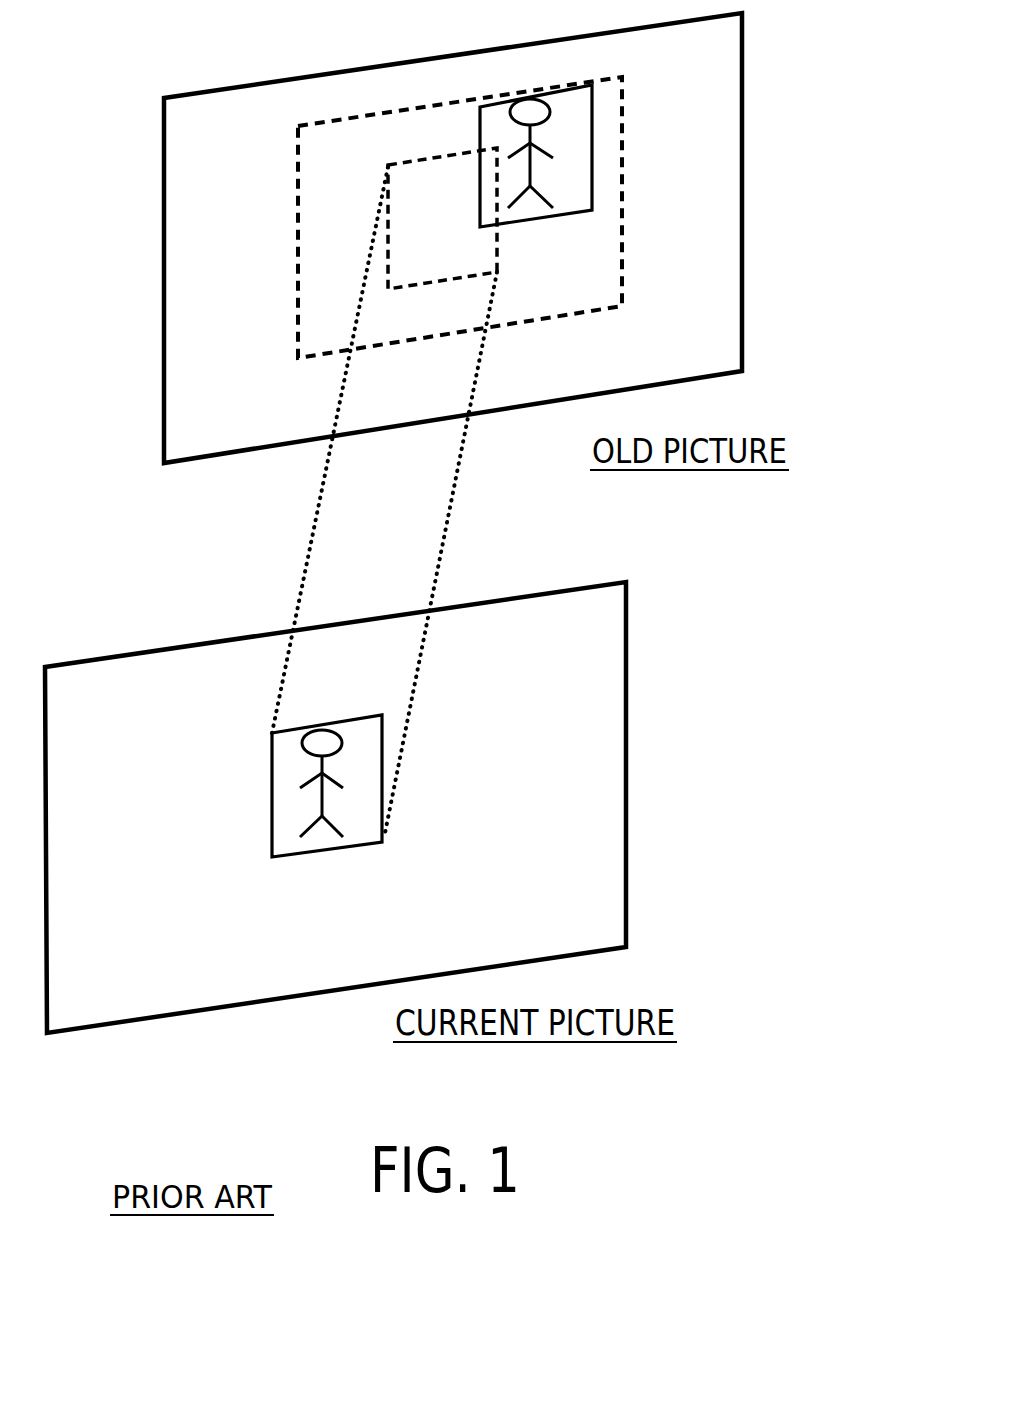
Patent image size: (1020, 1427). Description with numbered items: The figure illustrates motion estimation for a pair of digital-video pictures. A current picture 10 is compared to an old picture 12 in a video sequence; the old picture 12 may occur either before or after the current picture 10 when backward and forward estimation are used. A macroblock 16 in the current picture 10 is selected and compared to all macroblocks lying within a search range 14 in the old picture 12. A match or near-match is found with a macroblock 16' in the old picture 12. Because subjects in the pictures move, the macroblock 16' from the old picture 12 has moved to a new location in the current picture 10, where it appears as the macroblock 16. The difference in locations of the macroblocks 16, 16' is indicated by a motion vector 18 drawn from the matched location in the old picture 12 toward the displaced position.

The current picture 10 is at (132, 971).
The old picture 12 is at (240, 402).
The search range 14 is at (297, 167).
The macroblock 16 is at (327, 818).
The macroblock 16' is at (536, 186).
The motion vector 18 is at (395, 162).